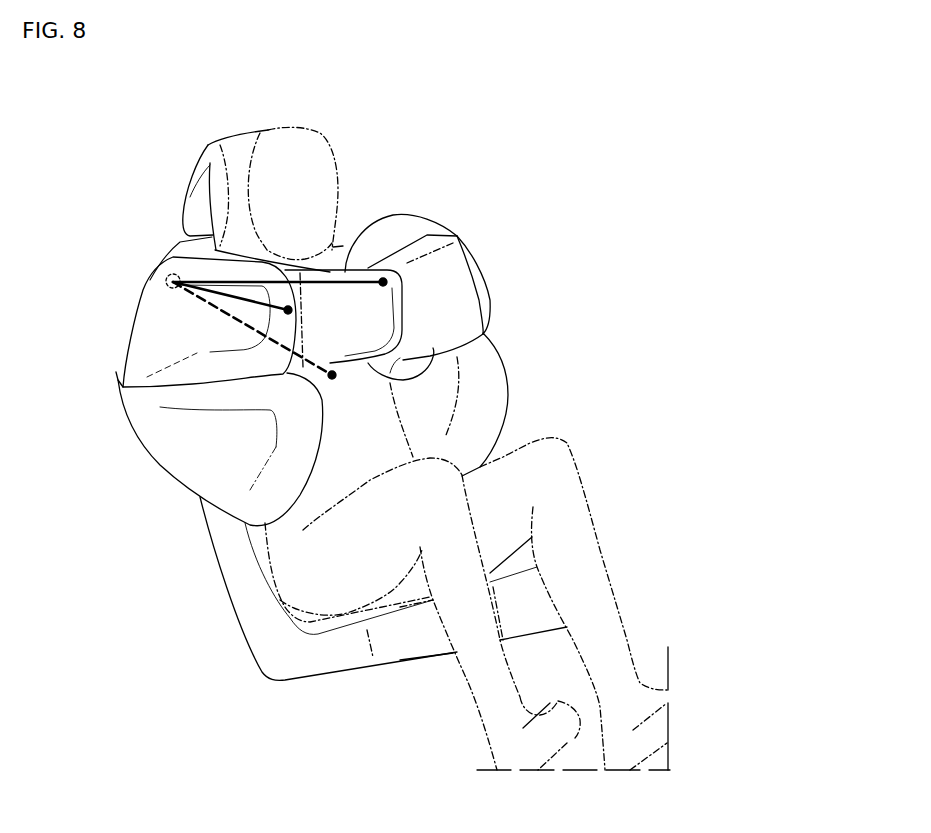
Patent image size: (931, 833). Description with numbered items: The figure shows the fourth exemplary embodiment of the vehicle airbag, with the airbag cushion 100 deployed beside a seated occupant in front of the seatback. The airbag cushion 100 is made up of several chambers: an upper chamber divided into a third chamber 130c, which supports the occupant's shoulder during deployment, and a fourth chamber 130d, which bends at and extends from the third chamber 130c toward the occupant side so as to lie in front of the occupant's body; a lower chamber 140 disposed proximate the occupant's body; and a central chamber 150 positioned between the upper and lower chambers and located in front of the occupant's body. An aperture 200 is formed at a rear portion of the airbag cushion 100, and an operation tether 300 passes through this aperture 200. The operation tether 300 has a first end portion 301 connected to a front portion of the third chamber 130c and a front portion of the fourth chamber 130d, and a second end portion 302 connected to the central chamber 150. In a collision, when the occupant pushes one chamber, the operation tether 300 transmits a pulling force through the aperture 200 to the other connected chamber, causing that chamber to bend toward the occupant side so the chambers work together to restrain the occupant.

The airbag cushion 100 is at (492, 258).
The third chamber 130c is at (410, 228).
The fourth chamber 130d is at (453, 285).
The lower chamber 140 is at (485, 355).
The central chamber 150 is at (418, 370).
The aperture 200 is at (165, 273).
The operation tether 300 is at (194, 274).
The first end portion 301 is at (210, 277).
The second end portion 302 is at (173, 312).